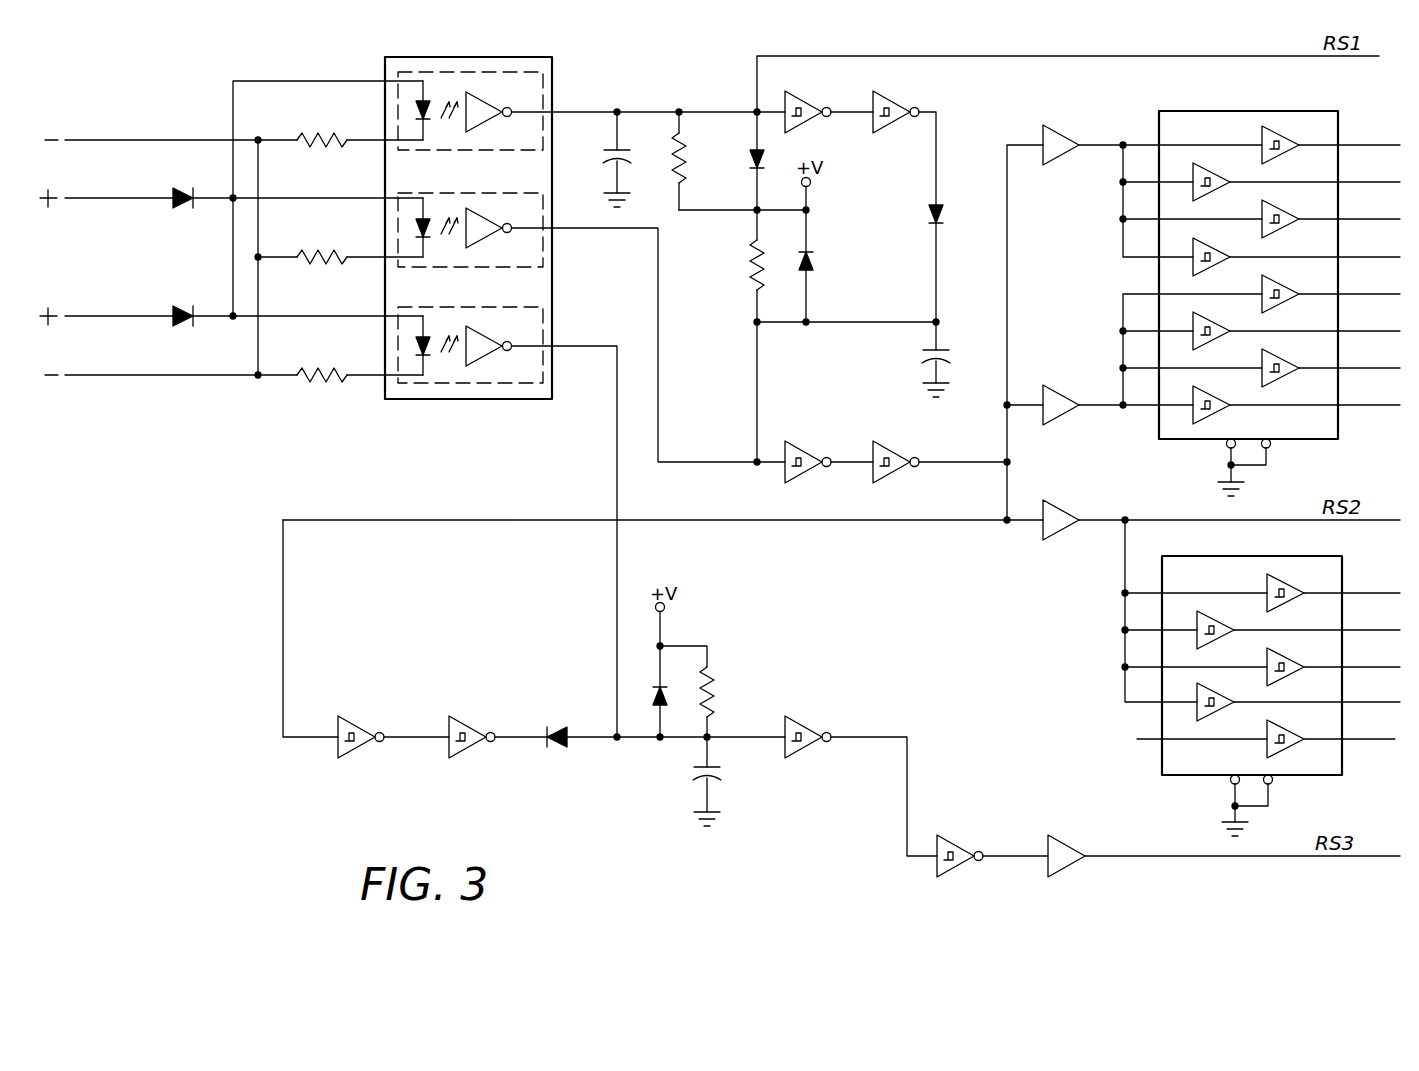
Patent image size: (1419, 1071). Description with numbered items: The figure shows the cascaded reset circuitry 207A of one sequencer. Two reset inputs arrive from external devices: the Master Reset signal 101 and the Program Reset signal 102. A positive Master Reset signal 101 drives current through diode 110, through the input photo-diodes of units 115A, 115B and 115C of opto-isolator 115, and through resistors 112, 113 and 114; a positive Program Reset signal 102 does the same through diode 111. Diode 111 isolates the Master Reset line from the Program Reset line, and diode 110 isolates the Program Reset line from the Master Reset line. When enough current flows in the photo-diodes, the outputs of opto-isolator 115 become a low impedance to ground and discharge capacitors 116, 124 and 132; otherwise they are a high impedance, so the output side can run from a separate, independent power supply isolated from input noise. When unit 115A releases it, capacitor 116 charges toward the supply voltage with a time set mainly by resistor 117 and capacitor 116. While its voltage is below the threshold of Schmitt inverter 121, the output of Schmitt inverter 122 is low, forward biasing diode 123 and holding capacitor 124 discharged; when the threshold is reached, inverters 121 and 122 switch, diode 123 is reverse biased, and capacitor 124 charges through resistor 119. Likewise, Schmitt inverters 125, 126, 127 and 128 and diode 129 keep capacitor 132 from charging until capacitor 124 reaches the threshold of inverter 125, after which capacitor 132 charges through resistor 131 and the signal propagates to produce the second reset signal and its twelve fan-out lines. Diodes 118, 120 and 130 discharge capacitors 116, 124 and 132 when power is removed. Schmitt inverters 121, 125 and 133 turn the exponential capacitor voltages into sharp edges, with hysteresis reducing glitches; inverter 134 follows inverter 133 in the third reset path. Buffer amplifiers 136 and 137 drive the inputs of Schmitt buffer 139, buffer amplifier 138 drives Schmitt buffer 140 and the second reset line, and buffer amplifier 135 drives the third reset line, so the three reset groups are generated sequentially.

The Master Reset signal 101 is at (158, 170).
The Program Reset signal 102 is at (158, 348).
The diode 110 is at (185, 205).
The diode 111 is at (182, 307).
The resistor 112 is at (322, 139).
The resistor 113 is at (322, 256).
The resistor 114 is at (322, 374).
The opto-isolator 115 is at (482, 57).
The unit of opto-isolator 115A is at (545, 82).
The unit of opto-isolator 115B is at (545, 242).
The unit of opto-isolator 115C is at (545, 327).
The capacitor 116 is at (610, 167).
The resistor 117 is at (693, 158).
The diode 118 is at (747, 163).
The resistor 119 is at (750, 270).
The diode 120 is at (815, 260).
The Schmitt inverter 121 is at (803, 103).
The Schmitt inverter 122 is at (892, 97).
The diode 123 is at (928, 213).
The capacitor 124 is at (922, 352).
The Schmitt inverter 125 is at (799, 422).
The Schmitt inverter 126 is at (895, 440).
The Schmitt inverter 127 is at (355, 718).
The Schmitt inverter 128 is at (465, 718).
The diode 129 is at (555, 728).
The diode 130 is at (652, 691).
The resistor 131 is at (718, 690).
The capacitor 132 is at (690, 774).
The Schmitt inverter 133 is at (810, 718).
The Schmitt inverter 134 is at (955, 845).
The buffer amplifier 135 is at (1070, 848).
The buffer amplifier 136 is at (1060, 135).
The buffer amplifier 137 is at (1052, 393).
The buffer amplifier 138 is at (1055, 536).
The Schmitt buffer 139 is at (1270, 111).
The Schmitt buffer 140 is at (1262, 556).
The cascaded reset circuitry 207A is at (186, 768).